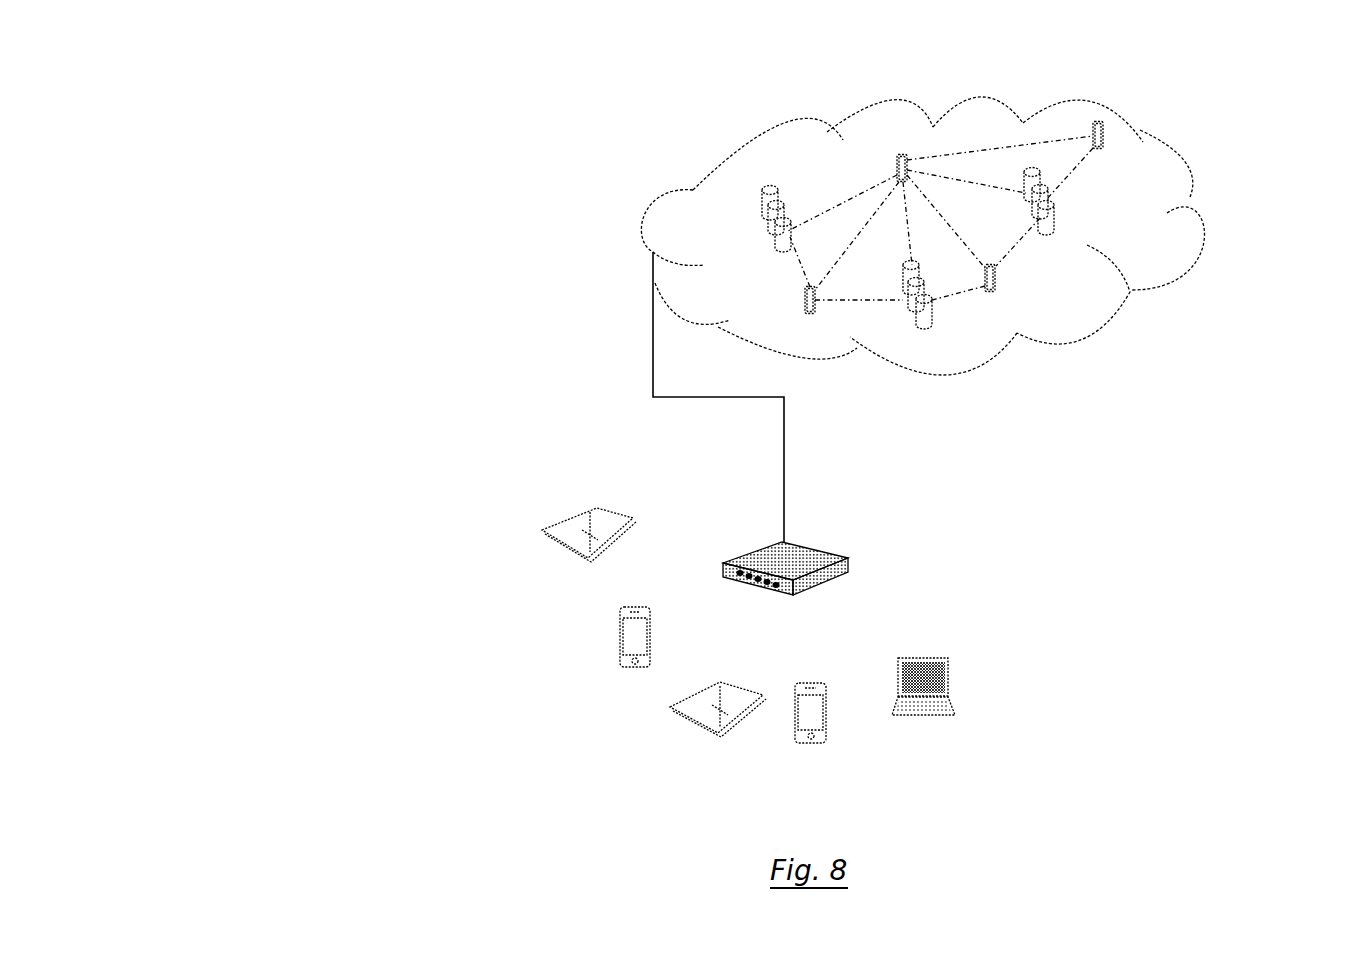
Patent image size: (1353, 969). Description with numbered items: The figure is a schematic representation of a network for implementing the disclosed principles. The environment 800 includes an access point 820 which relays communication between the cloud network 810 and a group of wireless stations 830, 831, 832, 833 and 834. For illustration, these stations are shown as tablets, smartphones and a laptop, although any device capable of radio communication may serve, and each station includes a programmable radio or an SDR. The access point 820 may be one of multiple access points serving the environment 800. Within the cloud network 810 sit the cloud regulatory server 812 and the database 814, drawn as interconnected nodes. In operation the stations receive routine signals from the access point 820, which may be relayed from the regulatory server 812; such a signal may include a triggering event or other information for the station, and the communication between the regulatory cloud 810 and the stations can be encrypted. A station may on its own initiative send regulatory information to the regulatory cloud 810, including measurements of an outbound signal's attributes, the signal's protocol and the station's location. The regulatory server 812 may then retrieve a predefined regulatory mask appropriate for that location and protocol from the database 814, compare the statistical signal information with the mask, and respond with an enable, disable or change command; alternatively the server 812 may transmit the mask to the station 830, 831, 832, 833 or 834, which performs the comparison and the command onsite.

The environment 800 is at (285, 130).
The cloud network 810 is at (1207, 243).
The cloud regulatory server 812 is at (893, 160).
The database 814 is at (762, 193).
The access point 820 is at (832, 550).
The wireless station 830 is at (553, 542).
The wireless station 831 is at (620, 662).
The wireless station 832 is at (687, 715).
The wireless station 833 is at (797, 740).
The wireless station 834 is at (923, 715).